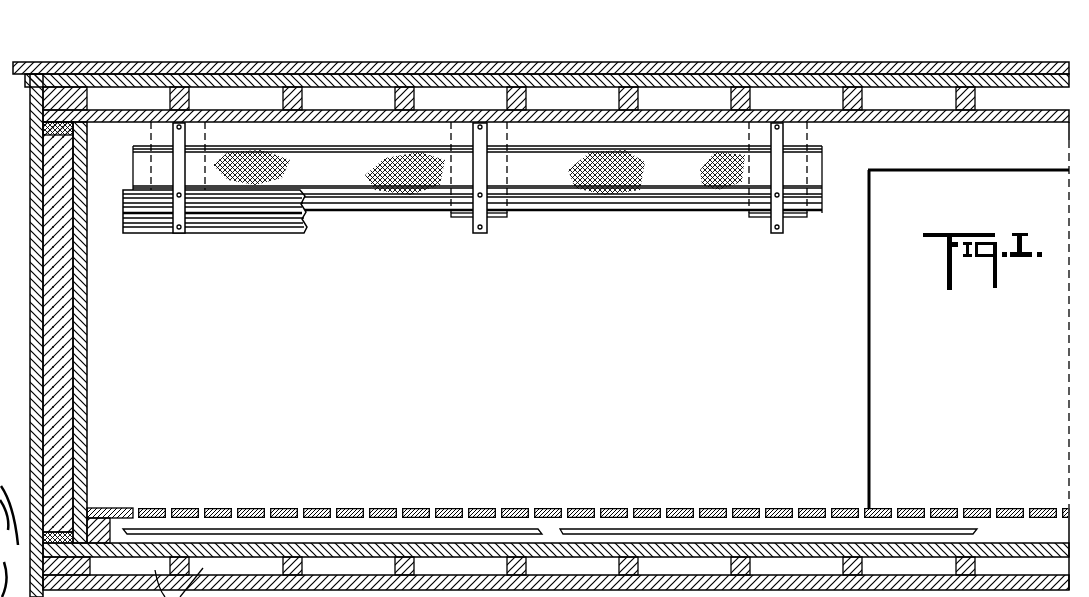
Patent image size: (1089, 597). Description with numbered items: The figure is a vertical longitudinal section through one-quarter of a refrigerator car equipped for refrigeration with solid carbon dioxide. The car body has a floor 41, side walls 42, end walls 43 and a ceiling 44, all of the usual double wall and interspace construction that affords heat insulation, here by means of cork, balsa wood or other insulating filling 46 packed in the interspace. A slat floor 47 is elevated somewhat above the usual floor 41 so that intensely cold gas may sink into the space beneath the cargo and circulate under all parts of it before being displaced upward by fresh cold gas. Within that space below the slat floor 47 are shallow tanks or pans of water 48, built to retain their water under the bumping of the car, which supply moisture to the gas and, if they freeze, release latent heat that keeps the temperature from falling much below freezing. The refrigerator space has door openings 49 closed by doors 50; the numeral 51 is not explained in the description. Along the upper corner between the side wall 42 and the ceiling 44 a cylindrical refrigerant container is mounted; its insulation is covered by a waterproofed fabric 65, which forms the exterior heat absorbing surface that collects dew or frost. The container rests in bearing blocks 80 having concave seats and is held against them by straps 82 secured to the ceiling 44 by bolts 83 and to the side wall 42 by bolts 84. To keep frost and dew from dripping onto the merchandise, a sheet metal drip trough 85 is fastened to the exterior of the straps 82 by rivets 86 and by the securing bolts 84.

The floor 41 is at (600, 547).
The side walls 42 is at (907, 365).
The end walls 43 is at (80, 342).
The ceiling 44 is at (363, 108).
The insulating filling 46 is at (58, 382).
The slat floor 47 is at (498, 507).
The shallow tanks of water 48 is at (242, 535).
The door openings 49 is at (868, 271).
The doors 50 is at (968, 251).
The end wall 51 is at (1034, 141).
The waterproofed fabric 65 is at (277, 180).
The bearing blocks 80 is at (197, 135).
The straps 82 is at (173, 160).
The bolts 83 is at (173, 130).
The bolts 84 is at (178, 233).
The drip trough 85 is at (123, 195).
The rivets 86 is at (177, 194).